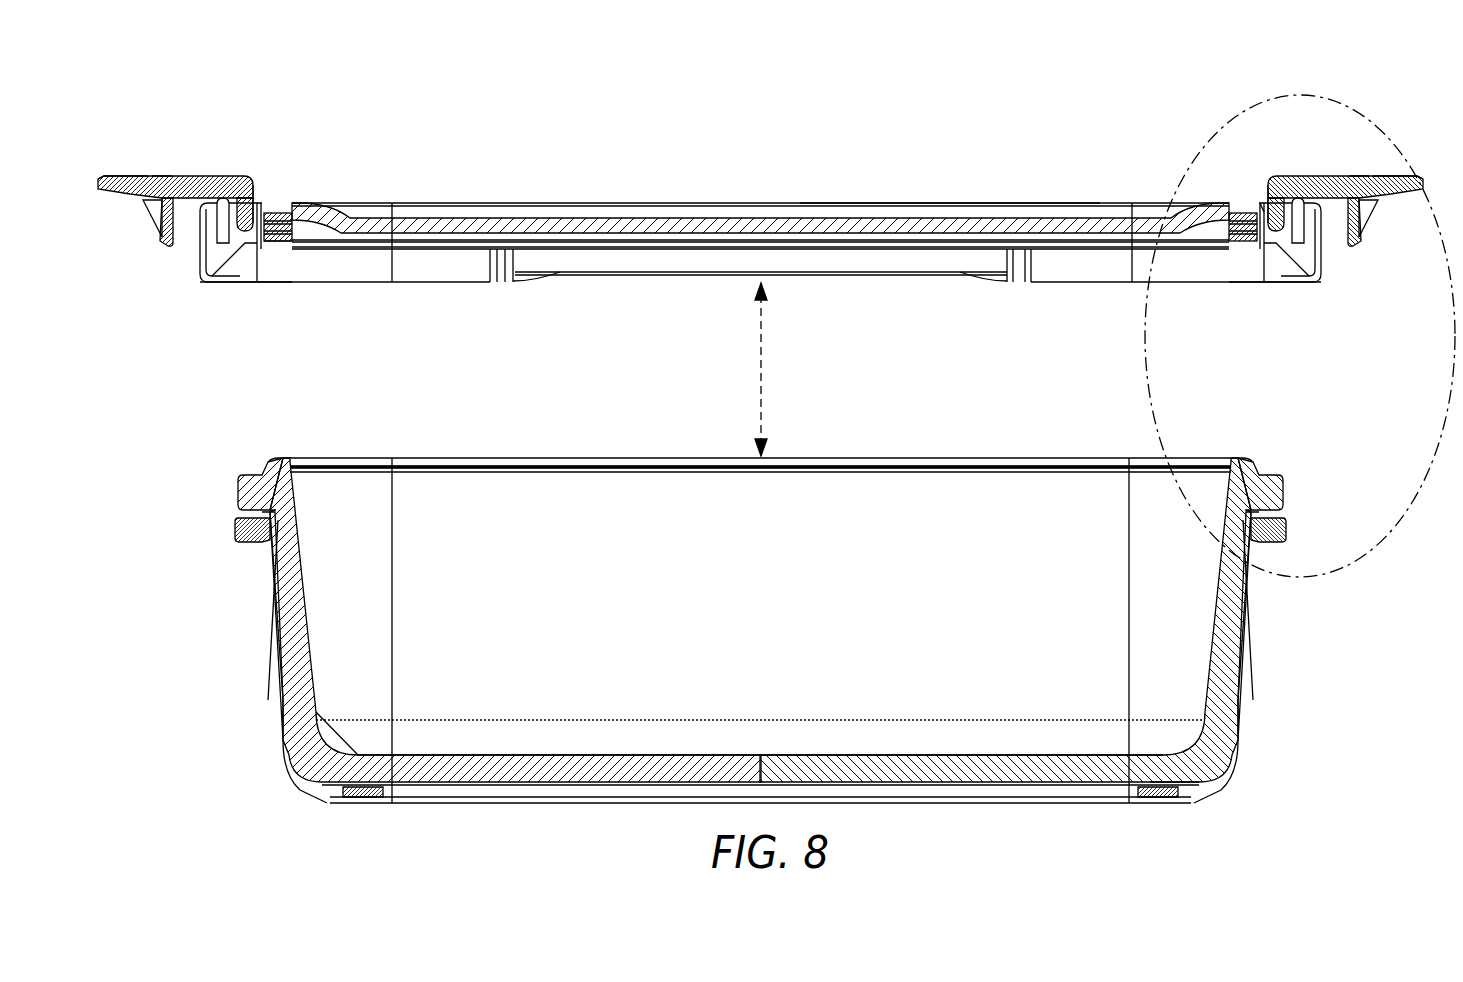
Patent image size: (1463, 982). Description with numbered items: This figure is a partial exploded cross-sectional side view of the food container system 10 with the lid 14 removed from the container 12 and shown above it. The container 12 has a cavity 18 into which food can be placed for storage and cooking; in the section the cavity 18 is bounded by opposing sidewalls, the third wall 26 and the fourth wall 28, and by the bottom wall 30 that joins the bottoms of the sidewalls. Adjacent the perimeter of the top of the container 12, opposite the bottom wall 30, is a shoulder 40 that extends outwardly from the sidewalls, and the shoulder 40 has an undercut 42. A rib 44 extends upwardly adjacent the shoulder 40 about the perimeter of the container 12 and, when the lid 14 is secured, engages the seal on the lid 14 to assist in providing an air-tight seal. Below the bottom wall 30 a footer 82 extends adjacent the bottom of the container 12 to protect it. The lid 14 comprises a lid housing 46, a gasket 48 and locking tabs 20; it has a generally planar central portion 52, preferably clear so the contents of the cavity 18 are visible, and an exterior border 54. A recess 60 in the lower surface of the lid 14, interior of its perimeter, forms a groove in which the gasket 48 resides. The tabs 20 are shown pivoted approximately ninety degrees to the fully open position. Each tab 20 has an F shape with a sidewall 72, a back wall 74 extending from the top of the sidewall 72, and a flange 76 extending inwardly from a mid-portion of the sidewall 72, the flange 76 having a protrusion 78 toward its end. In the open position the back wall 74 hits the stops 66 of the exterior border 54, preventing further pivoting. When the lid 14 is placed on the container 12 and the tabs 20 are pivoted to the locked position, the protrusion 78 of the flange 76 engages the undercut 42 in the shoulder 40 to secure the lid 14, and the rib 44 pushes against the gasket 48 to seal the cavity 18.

The food container system 10 is at (1200, 160).
The container 12 is at (1242, 690).
The lid 14 is at (712, 218).
The cavity 18 is at (856, 516).
The tabs 20 is at (200, 178).
The third wall 26 is at (1240, 610).
The fourth wall 28 is at (282, 690).
The bottom wall 30 is at (1060, 768).
The shoulder 40 is at (238, 492).
The undercut 42 is at (258, 510).
The rib 44 is at (275, 455).
The lid housing 46 is at (557, 203).
The gasket 48 is at (278, 243).
The central portion 52 is at (872, 205).
The exterior border 54 is at (255, 192).
The recess 60 is at (277, 215).
The stops 66 is at (235, 218).
The sidewall 72 is at (120, 176).
The back wall 74 is at (1260, 203).
The flange 76 is at (160, 212).
The protrusion 78 is at (170, 247).
The footer 82 is at (1196, 803).